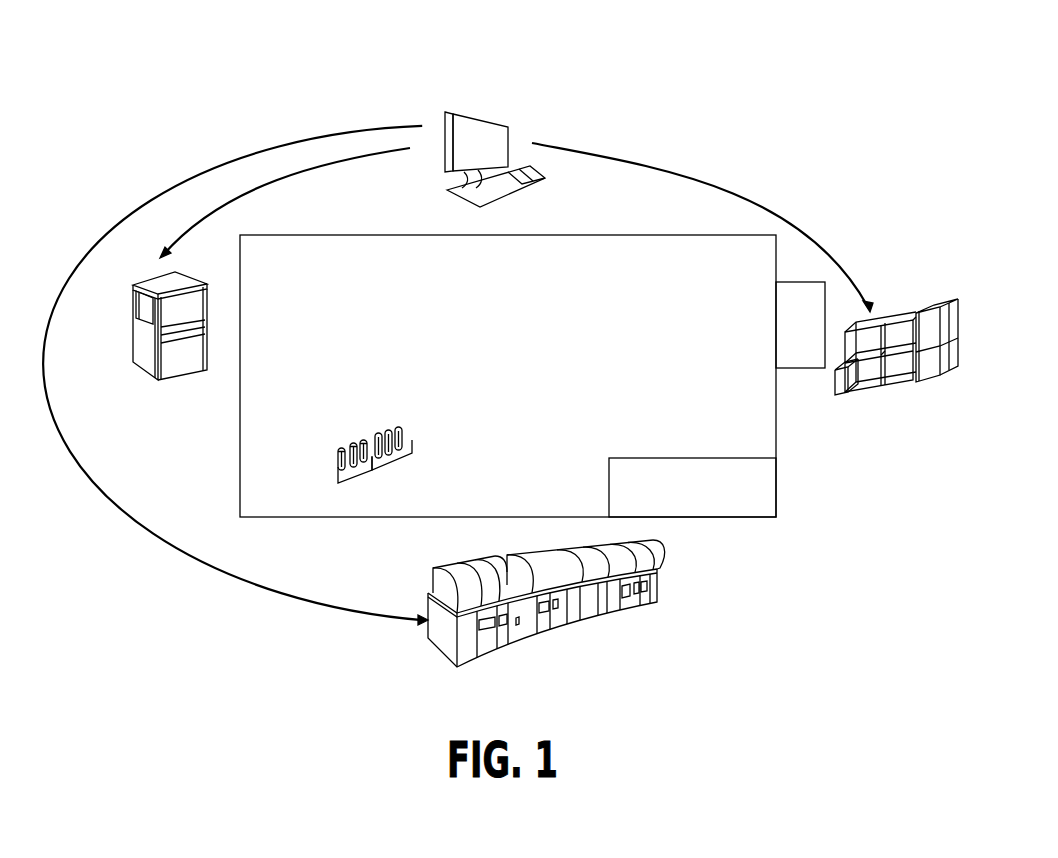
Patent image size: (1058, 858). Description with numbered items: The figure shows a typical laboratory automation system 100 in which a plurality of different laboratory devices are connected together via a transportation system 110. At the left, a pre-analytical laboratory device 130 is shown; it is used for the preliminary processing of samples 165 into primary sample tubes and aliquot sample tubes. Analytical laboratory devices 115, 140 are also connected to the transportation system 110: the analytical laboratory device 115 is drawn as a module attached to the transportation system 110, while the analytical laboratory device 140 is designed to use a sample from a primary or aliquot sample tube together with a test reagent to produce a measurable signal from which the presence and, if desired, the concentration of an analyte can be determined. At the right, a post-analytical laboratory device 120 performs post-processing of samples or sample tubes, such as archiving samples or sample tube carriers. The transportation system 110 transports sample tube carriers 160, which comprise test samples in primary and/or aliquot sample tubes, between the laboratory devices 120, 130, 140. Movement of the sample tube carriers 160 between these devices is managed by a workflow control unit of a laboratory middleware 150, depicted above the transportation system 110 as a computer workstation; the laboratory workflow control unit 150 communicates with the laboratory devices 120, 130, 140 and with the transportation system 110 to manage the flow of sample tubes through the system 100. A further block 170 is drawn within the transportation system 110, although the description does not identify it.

The laboratory automation system 100 is at (716, 113).
The transportation system 110 is at (677, 283).
The analytical laboratory device 115 is at (821, 340).
The post-analytical laboratory device 120 is at (926, 385).
The pre-analytical laboratory device 130 is at (167, 382).
The analytical laboratory device 140 is at (587, 623).
The laboratory middleware 150 is at (523, 116).
The sample tube carriers 160 is at (396, 458).
The samples 165 is at (360, 427).
The module 170 is at (709, 504).